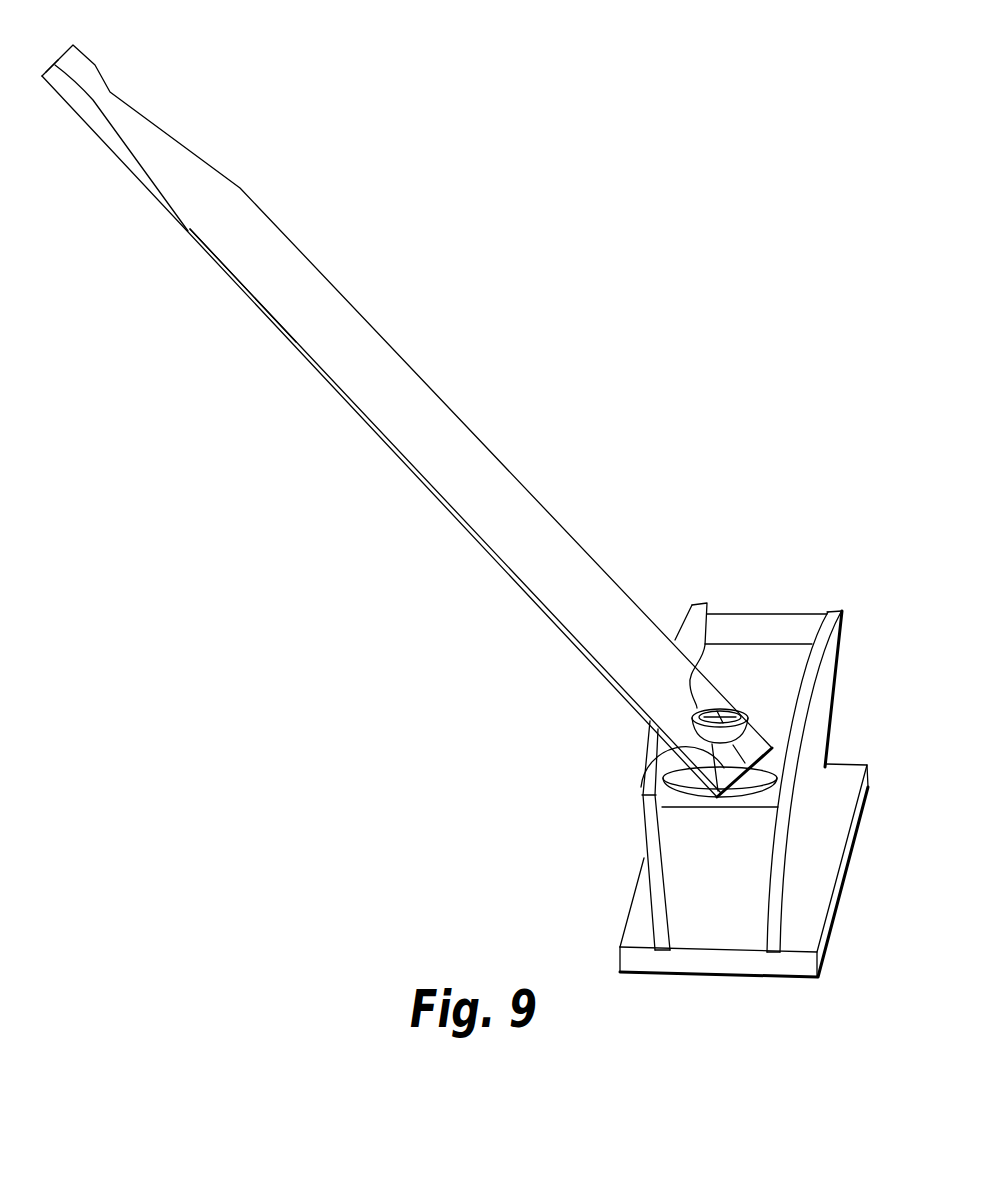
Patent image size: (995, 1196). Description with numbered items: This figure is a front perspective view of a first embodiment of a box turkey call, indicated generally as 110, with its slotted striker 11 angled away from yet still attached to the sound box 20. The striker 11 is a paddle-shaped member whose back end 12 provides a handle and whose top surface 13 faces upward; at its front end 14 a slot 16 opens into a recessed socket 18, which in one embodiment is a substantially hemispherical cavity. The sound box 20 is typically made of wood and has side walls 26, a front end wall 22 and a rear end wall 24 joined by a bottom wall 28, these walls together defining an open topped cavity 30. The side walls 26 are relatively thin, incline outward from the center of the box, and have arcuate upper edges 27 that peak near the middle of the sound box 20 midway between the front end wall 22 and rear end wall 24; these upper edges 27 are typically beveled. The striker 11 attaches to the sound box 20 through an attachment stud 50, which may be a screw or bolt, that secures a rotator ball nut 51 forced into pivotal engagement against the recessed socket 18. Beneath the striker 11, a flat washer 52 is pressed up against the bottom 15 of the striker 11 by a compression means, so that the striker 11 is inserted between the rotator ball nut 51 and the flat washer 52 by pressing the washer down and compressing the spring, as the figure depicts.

The slotted striker 11 is at (334, 226).
The back end 12 is at (96, 99).
The top surface 13 is at (425, 410).
The front end 14 is at (665, 738).
The bottom 15 is at (205, 332).
The slot 16 is at (746, 742).
The recessed socket 18 is at (690, 695).
The sound box 20 is at (884, 596).
The front end wall 22 is at (727, 893).
The rear end wall 24 is at (790, 628).
The side walls 26 is at (814, 751).
The arcuate upper edges 27 is at (818, 664).
The bottom wall 28 is at (848, 862).
The open topped cavity 30 is at (733, 667).
The attachment stud 50 is at (722, 712).
The rotator ball nut 51 is at (718, 798).
The flat washer 52 is at (643, 795).
The assembly 110 is at (348, 629).